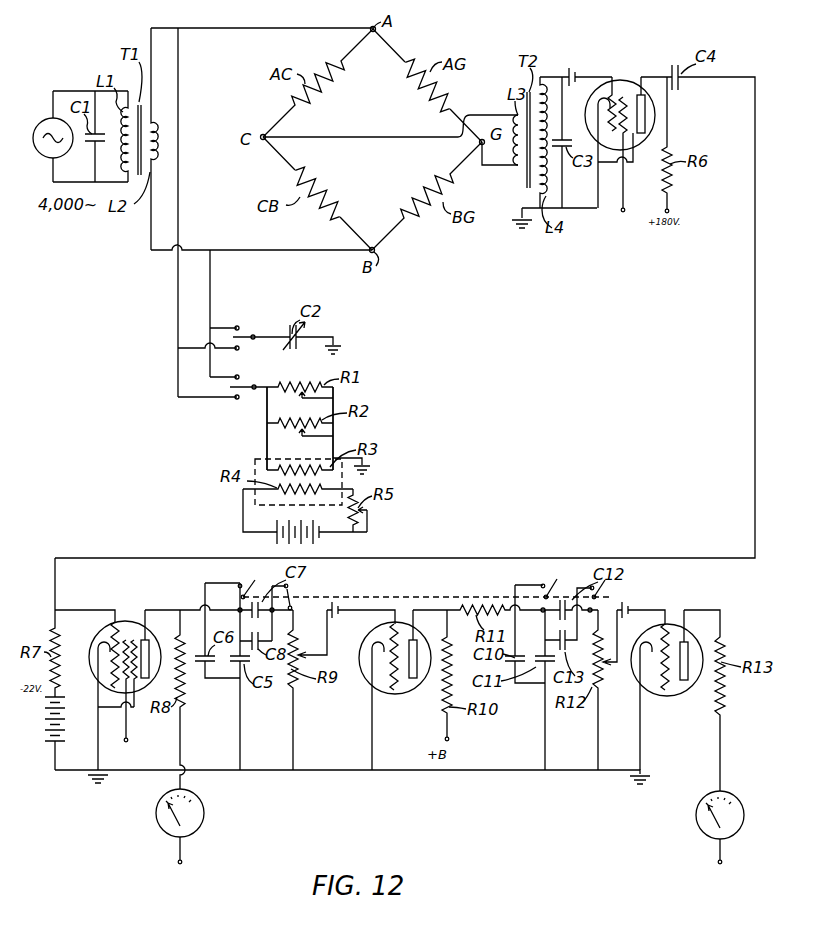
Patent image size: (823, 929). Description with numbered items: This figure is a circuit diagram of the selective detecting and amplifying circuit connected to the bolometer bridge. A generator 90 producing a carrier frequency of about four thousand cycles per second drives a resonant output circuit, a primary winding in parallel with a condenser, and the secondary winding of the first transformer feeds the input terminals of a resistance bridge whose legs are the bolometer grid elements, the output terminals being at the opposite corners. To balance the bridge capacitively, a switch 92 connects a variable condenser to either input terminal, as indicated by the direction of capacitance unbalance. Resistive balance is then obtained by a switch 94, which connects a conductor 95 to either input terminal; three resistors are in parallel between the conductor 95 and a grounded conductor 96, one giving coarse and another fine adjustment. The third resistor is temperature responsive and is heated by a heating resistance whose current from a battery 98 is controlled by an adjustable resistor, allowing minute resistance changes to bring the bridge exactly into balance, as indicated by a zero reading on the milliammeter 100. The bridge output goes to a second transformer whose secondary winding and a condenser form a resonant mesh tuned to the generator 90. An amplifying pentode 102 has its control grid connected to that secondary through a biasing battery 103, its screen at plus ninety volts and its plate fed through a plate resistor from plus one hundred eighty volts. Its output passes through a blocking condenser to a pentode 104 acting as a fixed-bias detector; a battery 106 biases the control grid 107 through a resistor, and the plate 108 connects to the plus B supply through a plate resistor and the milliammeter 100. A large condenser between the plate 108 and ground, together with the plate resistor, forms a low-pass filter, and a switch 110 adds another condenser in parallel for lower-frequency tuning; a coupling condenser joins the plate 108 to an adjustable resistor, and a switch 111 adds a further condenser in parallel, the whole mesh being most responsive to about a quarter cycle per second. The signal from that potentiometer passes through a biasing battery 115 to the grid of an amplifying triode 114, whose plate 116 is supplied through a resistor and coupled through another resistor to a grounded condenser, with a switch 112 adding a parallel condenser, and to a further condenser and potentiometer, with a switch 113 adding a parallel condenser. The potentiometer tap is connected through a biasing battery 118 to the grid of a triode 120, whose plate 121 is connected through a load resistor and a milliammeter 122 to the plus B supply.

The generator 90 is at (47, 123).
The switch 92 is at (251, 335).
The switch 94 is at (250, 387).
The conductor 95 is at (267, 431).
The grounded conductor 96 is at (333, 429).
The battery 98 is at (261, 532).
The milliammeter 100 is at (202, 803).
The amplifying pentode 102 is at (628, 84).
The biasing battery 103 is at (576, 76).
The pentode 104 is at (119, 683).
The battery 106 is at (47, 722).
The control grid 107 is at (141, 612).
The plate 108 is at (148, 641).
The switch 110 is at (252, 586).
The switch 111 is at (298, 587).
The switch 112 is at (554, 588).
The switch 113 is at (606, 584).
The amplifying triode 114 is at (393, 682).
The biasing battery 115 is at (340, 609).
The plate 116 is at (413, 640).
The biasing battery 118 is at (629, 607).
The triode 120 is at (697, 679).
The plate 121 is at (685, 647).
The milliammeter 122 is at (729, 792).